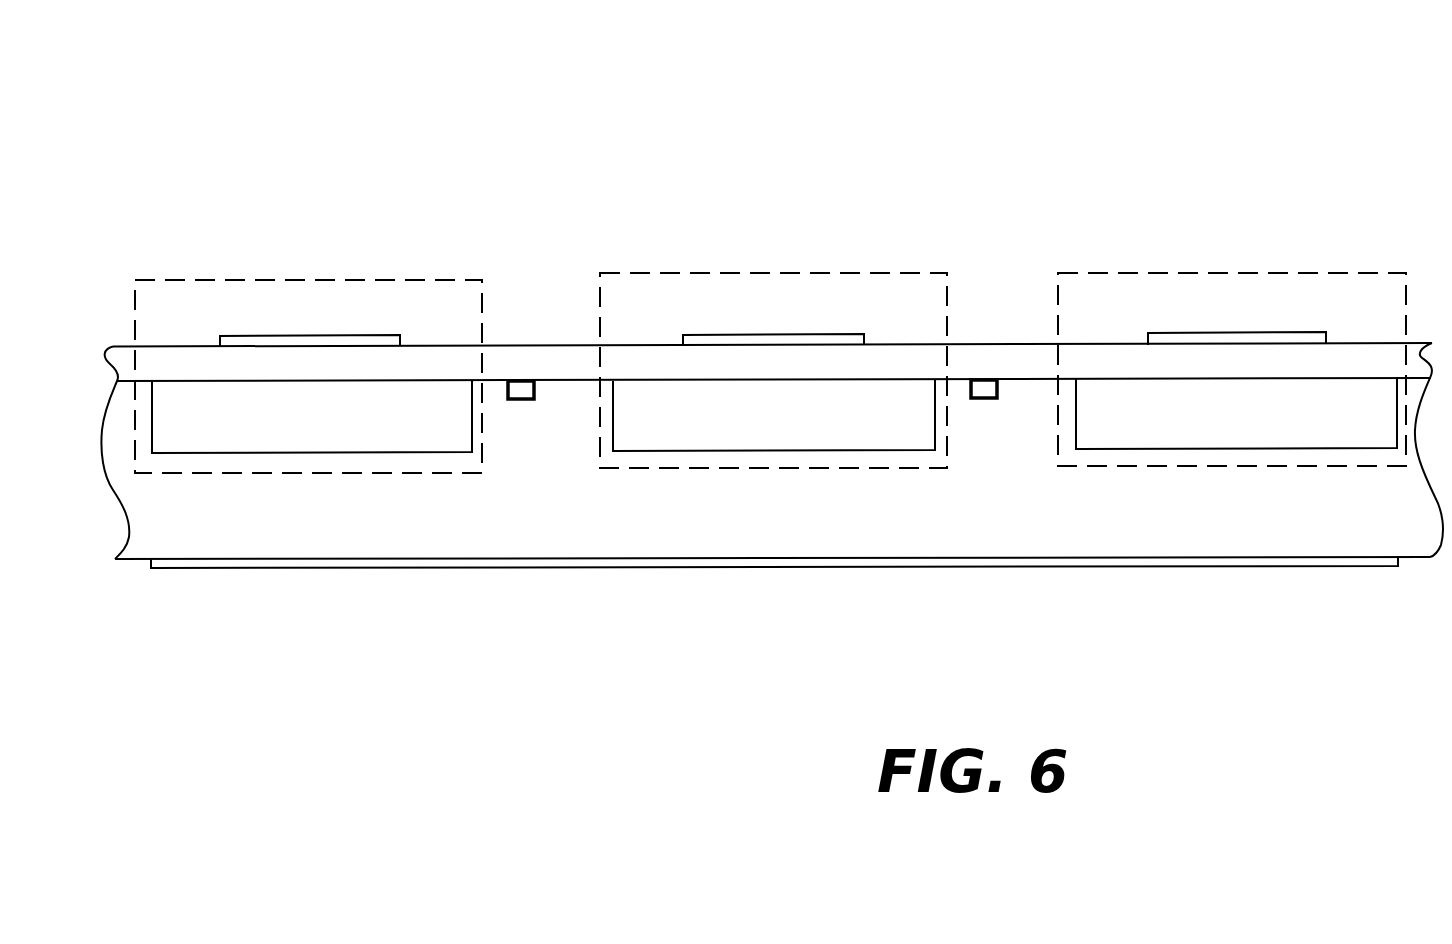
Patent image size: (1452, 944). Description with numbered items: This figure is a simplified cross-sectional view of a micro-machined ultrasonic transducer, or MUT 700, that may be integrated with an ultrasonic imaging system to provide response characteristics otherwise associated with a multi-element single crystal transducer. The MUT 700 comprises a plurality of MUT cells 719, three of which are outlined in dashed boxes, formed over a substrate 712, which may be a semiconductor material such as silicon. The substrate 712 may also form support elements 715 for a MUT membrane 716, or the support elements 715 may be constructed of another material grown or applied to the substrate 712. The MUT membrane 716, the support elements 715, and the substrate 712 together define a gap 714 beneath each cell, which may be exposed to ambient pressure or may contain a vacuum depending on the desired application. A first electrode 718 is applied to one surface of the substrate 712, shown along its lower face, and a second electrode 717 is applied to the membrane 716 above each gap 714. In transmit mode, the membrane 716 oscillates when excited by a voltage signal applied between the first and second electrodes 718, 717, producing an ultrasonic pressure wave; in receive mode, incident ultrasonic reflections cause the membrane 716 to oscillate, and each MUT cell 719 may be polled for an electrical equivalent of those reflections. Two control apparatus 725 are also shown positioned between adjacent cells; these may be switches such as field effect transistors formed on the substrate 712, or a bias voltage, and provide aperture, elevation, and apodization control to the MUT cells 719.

The micro-machined ultrasonic transducer (MUT) 700 is at (670, 98).
The substrate 712 is at (203, 532).
The gap 714 is at (200, 447).
The support elements 715 is at (555, 444).
The MUT membrane 716 is at (455, 377).
The second electrode 717 is at (350, 335).
The first electrode 718 is at (773, 567).
The MUT cells 719 is at (185, 311).
The control apparatus 725 is at (522, 380).